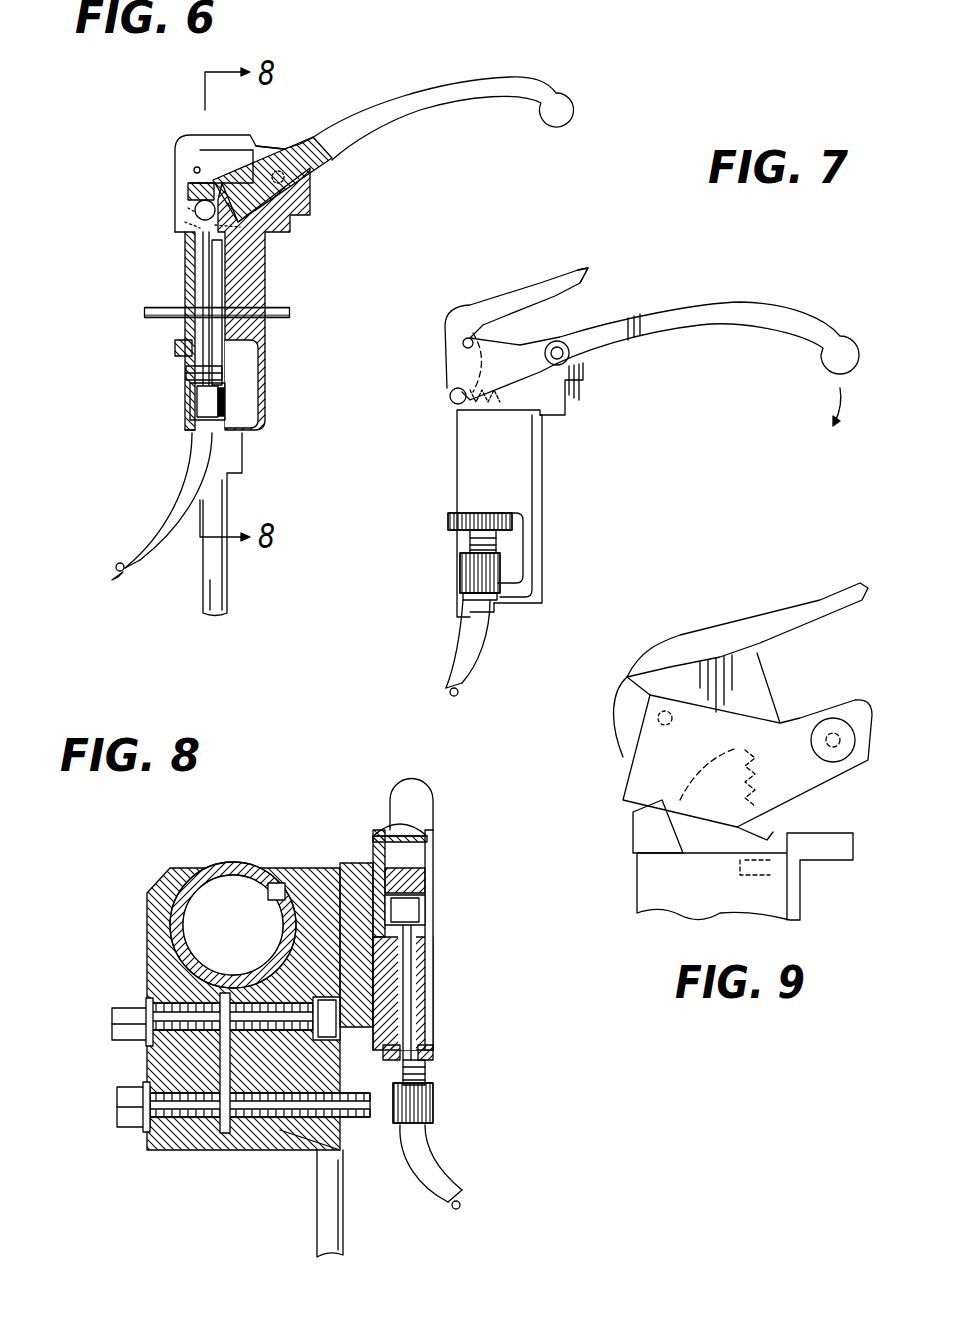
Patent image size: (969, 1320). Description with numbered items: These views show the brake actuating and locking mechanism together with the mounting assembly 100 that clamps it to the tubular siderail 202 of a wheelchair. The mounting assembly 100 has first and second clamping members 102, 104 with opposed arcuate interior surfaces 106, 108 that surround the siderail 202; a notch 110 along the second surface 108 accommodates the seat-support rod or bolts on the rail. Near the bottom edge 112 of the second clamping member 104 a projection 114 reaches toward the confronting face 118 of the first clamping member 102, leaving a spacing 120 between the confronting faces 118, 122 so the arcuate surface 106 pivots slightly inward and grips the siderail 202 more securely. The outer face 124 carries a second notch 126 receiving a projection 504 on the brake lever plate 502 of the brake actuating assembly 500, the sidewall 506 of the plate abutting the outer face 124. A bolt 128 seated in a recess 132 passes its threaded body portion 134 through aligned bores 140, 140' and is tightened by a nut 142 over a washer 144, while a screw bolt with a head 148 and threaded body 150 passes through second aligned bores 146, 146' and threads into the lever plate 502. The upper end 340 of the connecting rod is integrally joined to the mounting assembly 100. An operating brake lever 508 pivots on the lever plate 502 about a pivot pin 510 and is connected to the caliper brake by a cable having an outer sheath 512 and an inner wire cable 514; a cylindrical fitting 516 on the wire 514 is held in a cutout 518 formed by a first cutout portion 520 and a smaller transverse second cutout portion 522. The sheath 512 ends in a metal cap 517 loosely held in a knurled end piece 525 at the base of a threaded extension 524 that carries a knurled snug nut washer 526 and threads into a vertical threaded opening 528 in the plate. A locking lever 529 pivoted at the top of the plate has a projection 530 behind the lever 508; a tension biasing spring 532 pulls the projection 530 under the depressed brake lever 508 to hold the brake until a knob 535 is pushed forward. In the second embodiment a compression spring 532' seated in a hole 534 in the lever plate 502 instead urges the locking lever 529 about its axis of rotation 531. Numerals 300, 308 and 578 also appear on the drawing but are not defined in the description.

In FIG. 8, the mounting assembly 100 is at (147, 891).
In FIG. 8, the first clamping member 102 is at (147, 905).
In FIG. 8, the second clamping member 104 is at (284, 880).
In FIG. 8, the arcuate interior surface 106 is at (185, 862).
In FIG. 8, the arcuate interior surface 108 is at (262, 880).
In FIG. 8, the notch 110 is at (323, 868).
In FIG. 8, the bottom edge 112 is at (250, 1152).
In FIG. 8, the projection 114 is at (230, 1148).
In FIG. 8, the confronting face 118 is at (165, 1150).
In FIG. 8, the spacing 120 is at (115, 1100).
In FIG. 8, the confronting face 122 is at (232, 1055).
In FIG. 8, the outer face 124 is at (352, 1010).
In FIG. 8, the second notch 126 is at (352, 1125).
In FIG. 8, the bolt 128 is at (112, 1022).
In FIG. 8, the recess 132 is at (357, 987).
In FIG. 8, the threaded body portion 134 is at (165, 1000).
In FIG. 8, the aligned bore 140 is at (173, 925).
In FIG. 8, the aligned bore 140' is at (230, 938).
In FIG. 8, the nut 142 is at (146, 1010).
In FIG. 8, the washer 144 is at (237, 1078).
In FIG. 8, the second aligned bore 146 is at (160, 1194).
In FIG. 8, the second aligned bore 146' is at (285, 1205).
In FIG. 8, the head 148 is at (148, 1150).
In FIG. 8, the threaded body 150 is at (265, 1135).
In FIG. 8, the tubular siderail 202 is at (227, 868).
In FIG. 8, the support tube 300 is at (345, 1237).
In FIG. 6, the tube lower end 308 is at (230, 585).
In FIG. 6, the upper end 340 is at (243, 492).
In FIG. 7, the upper end 340 is at (528, 607).
In FIG. 8, the upper end 340 is at (333, 1185).
In FIG. 6, the brake actuating assembly 500 is at (390, 88).
In FIG. 7, the brake actuating assembly 500 is at (703, 283).
In FIG. 6, the brake lever plate 502 is at (266, 280).
In FIG. 7, the brake lever plate 502 is at (543, 472).
In FIG. 9, the brake lever plate 502 is at (792, 892).
In FIG. 8, the brake lever plate 502 is at (433, 1030).
In FIG. 8, the projection 504 is at (433, 1095).
In FIG. 6, the cable 506 is at (167, 533).
In FIG. 7, the cable 506 is at (486, 660).
In FIG. 8, the cable 506 is at (435, 882).
In FIG. 6, the operating brake lever 508 is at (498, 80).
In FIG. 7, the operating brake lever 508 is at (745, 305).
In FIG. 9, the operating brake lever 508 is at (852, 672).
In FIG. 8, the operating brake lever 508 is at (435, 800).
In FIG. 6, the pivot pin 510 is at (336, 180).
In FIG. 7, the pivot pin 510 is at (562, 340).
In FIG. 6, the outer sheath 512 is at (120, 560).
In FIG. 7, the outer sheath 512 is at (468, 690).
In FIG. 8, the outer sheath 512 is at (458, 1198).
In FIG. 7, the inner coaxial wire cable 514 is at (448, 692).
In FIG. 6, the cylindrical fitting 516 is at (182, 227).
In FIG. 8, the cylindrical fitting 516 is at (433, 906).
In FIG. 6, the metal cap 517 is at (205, 402).
In FIG. 8, the cutout 518 is at (433, 925).
In FIG. 8, the first cutout portion 520 is at (407, 877).
In FIG. 8, the second cutout portion 522 is at (433, 940).
In FIG. 6, the threaded extension 524 is at (186, 372).
In FIG. 7, the threaded extension 524 is at (478, 548).
In FIG. 8, the threaded extension 524 is at (425, 1075).
In FIG. 6, the knurled end piece 525 is at (226, 398).
In FIG. 7, the knurled end piece 525 is at (472, 572).
In FIG. 8, the knurled end piece 525 is at (433, 1122).
In FIG. 6, the threaded snug nut washer 526 is at (175, 348).
In FIG. 7, the threaded snug nut washer 526 is at (450, 519).
In FIG. 6, the vertical threaded opening 528 is at (236, 250).
In FIG. 6, the locking lever 529 is at (189, 134).
In FIG. 7, the locking lever 529 is at (447, 347).
In FIG. 9, the locking lever 529 is at (675, 635).
In FIG. 8, the locking lever 529 is at (385, 828).
In FIG. 6, the projection 530 is at (182, 212).
In FIG. 7, the projection 530 is at (455, 404).
In FIG. 9, the projection 530 is at (637, 845).
In FIG. 9, the axis of rotation 531 is at (658, 722).
In FIG. 7, the biasing spring 532 is at (567, 409).
In FIG. 9, the compression spring 532' is at (796, 811).
In FIG. 9, the hole 534 is at (772, 868).
In FIG. 6, the knob 535 is at (302, 140).
In FIG. 7, the knob 535 is at (578, 272).
In FIG. 6, the ball retainer 578 is at (190, 192).